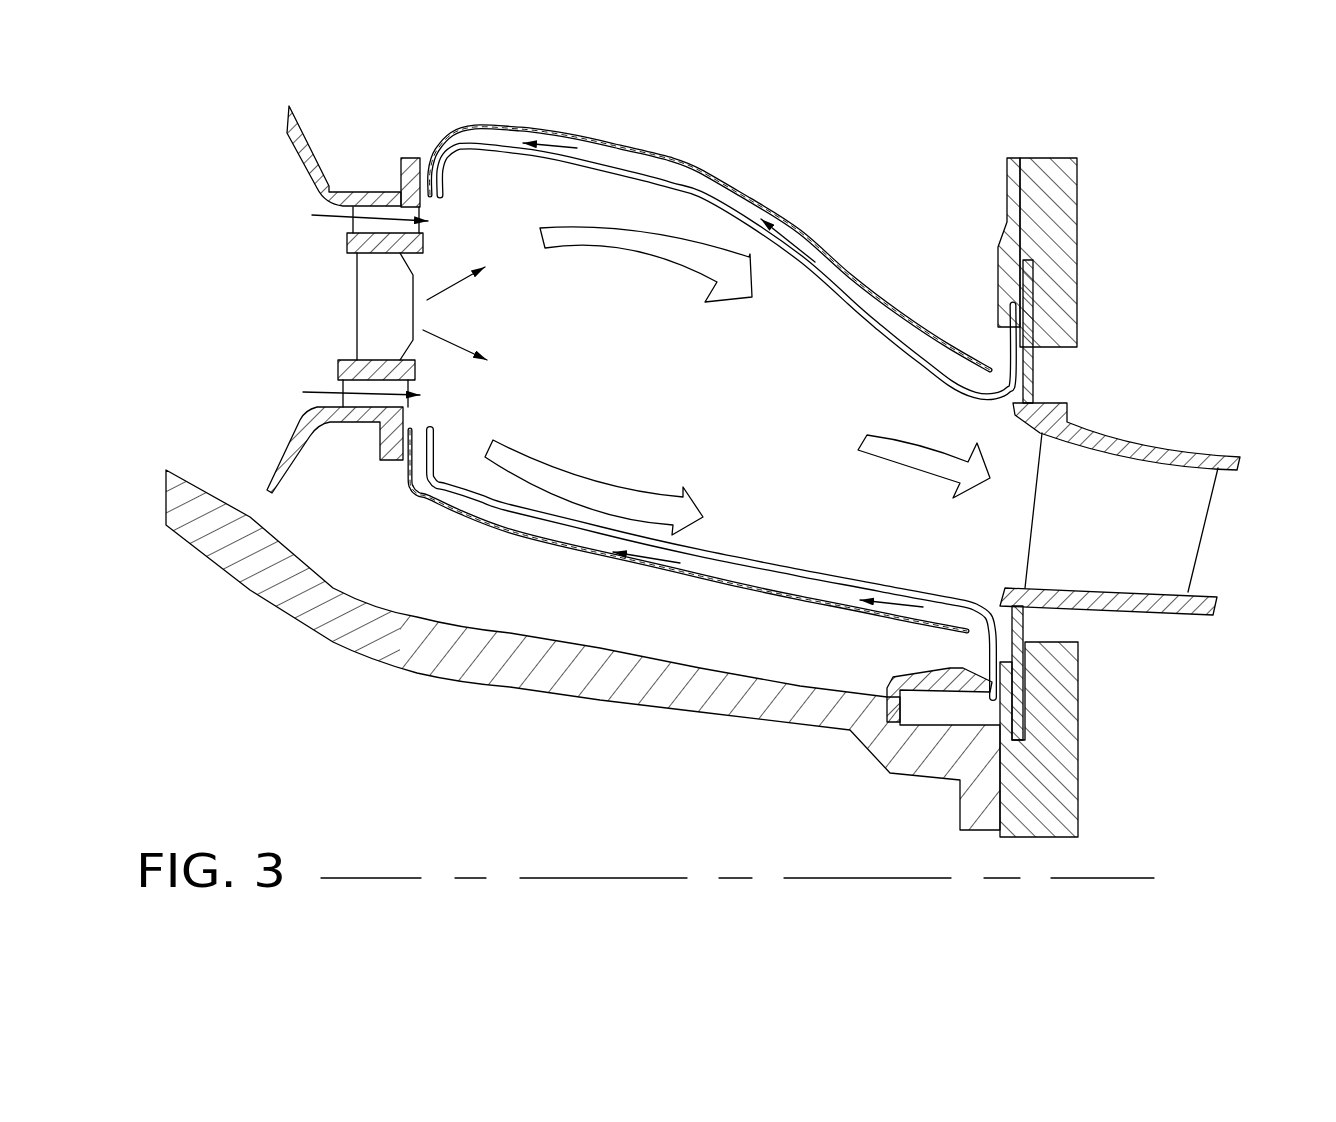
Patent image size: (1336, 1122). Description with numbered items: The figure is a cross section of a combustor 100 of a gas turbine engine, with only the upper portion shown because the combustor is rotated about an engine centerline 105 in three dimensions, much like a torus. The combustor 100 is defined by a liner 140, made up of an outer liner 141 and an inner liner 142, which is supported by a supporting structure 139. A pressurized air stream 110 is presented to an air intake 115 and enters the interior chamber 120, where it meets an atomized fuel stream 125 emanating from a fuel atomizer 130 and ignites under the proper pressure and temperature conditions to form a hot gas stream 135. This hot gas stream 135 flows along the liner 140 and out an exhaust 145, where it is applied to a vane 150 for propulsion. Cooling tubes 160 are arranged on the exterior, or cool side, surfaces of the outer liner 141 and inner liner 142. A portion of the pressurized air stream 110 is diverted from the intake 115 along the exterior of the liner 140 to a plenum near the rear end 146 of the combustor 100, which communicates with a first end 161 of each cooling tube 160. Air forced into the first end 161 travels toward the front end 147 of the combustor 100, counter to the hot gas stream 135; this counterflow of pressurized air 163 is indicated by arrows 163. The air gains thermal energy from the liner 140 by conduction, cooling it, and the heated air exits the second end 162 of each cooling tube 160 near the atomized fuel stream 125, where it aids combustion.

The combustor 100 is at (858, 88).
The engine centerline 105 is at (610, 878).
The pressurized air stream 110 is at (335, 217).
The air intake 115 is at (227, 217).
The interior chamber 120 is at (743, 392).
The atomized fuel stream 125 is at (447, 337).
The fuel atomizer 130 is at (357, 297).
The hot gas stream 135 is at (627, 250).
The supporting structure 139 is at (445, 680).
The liner 140 is at (377, 123).
The outer liner 141 is at (627, 178).
The inner liner 142 is at (717, 550).
The exhaust 145 is at (1193, 447).
The rear end 146 is at (1135, 340).
The front end 147 is at (437, 128).
The vane 150 is at (1172, 520).
The cooling tubes 160 is at (612, 135).
The first end 161 is at (987, 342).
The second end 162 is at (437, 207).
The flow of pressurized air 163 is at (800, 240).